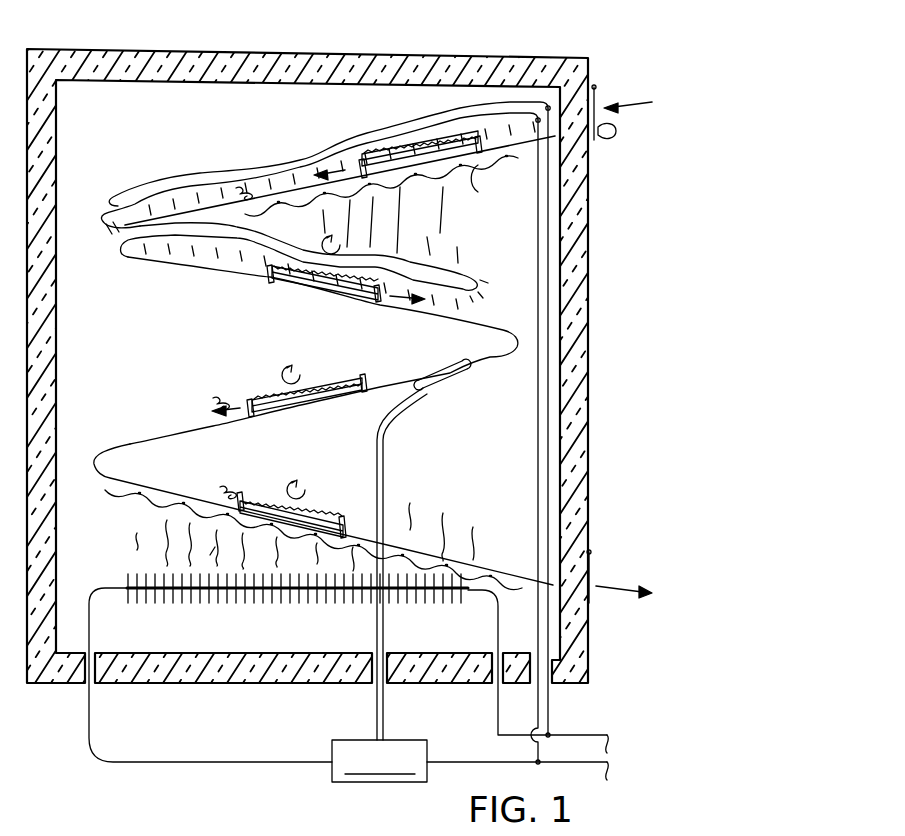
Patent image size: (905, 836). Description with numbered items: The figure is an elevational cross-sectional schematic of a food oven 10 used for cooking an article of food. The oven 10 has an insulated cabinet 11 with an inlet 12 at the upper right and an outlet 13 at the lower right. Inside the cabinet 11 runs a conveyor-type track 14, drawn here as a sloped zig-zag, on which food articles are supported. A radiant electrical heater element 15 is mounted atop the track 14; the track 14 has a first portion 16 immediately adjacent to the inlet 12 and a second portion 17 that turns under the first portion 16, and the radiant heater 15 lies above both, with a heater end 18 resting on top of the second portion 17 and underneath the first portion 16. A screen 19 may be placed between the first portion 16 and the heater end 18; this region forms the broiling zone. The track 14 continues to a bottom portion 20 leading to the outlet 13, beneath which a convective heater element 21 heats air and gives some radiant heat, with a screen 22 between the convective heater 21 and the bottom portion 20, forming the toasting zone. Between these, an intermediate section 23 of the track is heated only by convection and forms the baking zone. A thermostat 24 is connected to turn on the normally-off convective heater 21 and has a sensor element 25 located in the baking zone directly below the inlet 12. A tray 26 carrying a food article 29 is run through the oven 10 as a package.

The food oven 10 is at (609, 340).
The insulated cabinet 11 is at (590, 229).
The inlet 12 is at (598, 106).
The outlet 13 is at (592, 567).
The track 14 is at (537, 325).
The radiant electrical heater element 15 is at (212, 168).
The first portion of the track 16 is at (512, 163).
The second portion of the track 17 is at (177, 267).
The heater end 18 is at (415, 236).
The screen 19 is at (478, 192).
The bottom portion of the track 20 is at (515, 575).
The convective heater element 21 is at (158, 580).
The screen 22 is at (157, 507).
The intermediate section of the track 23 is at (383, 387).
The thermostat 24 is at (397, 740).
The sensor element 25 is at (458, 392).
The tray 26 is at (482, 145).
The food article 29 is at (425, 145).